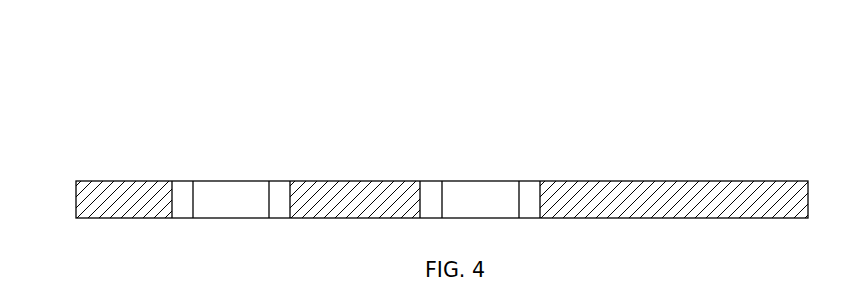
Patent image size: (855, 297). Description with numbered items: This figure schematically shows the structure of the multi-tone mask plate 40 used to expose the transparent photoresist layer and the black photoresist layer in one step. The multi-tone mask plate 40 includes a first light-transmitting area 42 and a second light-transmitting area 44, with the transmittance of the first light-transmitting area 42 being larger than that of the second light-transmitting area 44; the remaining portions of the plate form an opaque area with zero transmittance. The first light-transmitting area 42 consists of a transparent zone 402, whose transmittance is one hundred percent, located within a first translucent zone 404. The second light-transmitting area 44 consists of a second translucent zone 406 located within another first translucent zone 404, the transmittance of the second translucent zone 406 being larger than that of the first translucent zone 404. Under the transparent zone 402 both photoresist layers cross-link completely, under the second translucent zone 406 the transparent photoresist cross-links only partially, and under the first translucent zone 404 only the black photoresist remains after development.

The multi-tone mask plate 40 is at (714, 101).
The first light-transmitting area 42 is at (85, 80).
The second light-transmitting area 44 is at (320, 80).
The transparent zone 402 is at (232, 203).
The first translucent zone 404 is at (182, 193).
The second translucent zone 406 is at (480, 205).